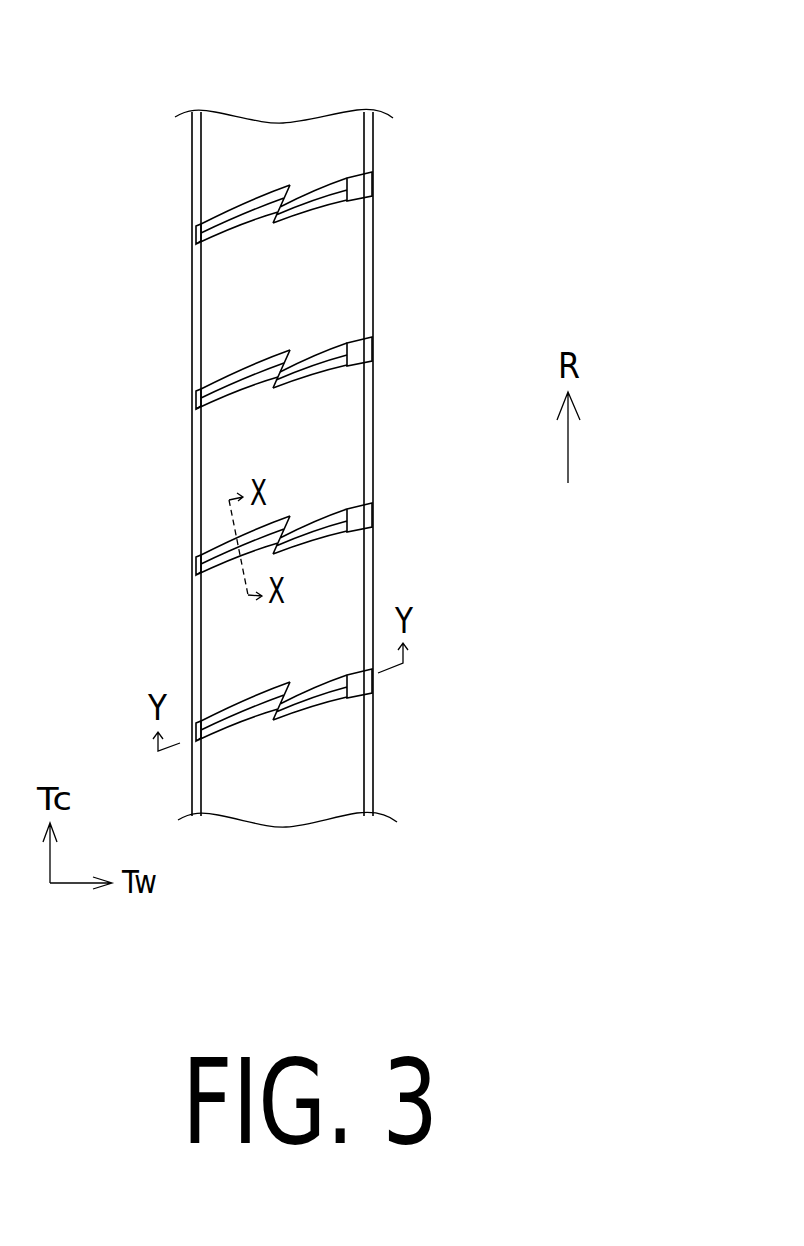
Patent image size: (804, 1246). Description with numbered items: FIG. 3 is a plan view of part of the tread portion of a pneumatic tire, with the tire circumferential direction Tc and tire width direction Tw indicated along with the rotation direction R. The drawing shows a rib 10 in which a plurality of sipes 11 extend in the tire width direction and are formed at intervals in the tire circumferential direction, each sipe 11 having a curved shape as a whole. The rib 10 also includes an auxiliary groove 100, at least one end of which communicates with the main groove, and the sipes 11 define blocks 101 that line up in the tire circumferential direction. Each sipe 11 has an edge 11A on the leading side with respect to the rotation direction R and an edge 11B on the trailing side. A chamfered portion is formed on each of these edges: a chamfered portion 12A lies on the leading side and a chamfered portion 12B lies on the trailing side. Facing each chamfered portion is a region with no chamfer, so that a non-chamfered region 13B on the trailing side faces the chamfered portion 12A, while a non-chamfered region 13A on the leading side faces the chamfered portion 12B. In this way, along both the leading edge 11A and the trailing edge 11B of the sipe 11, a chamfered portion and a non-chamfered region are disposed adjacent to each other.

The rib 10 is at (383, 87).
The sipe 11 is at (287, 383).
The edge on the leading side 11A is at (191, 372).
The edge on the trailing side 11B is at (375, 387).
The chamfered portion on the leading side 12A is at (242, 368).
The chamfered portion on the trailing side 12B is at (330, 363).
The non-chamfered region on the leading side 13A is at (327, 345).
The non-chamfered region on the trailing side 13B is at (248, 390).
The auxiliary groove 100 is at (360, 353).
The block 101 is at (307, 277).